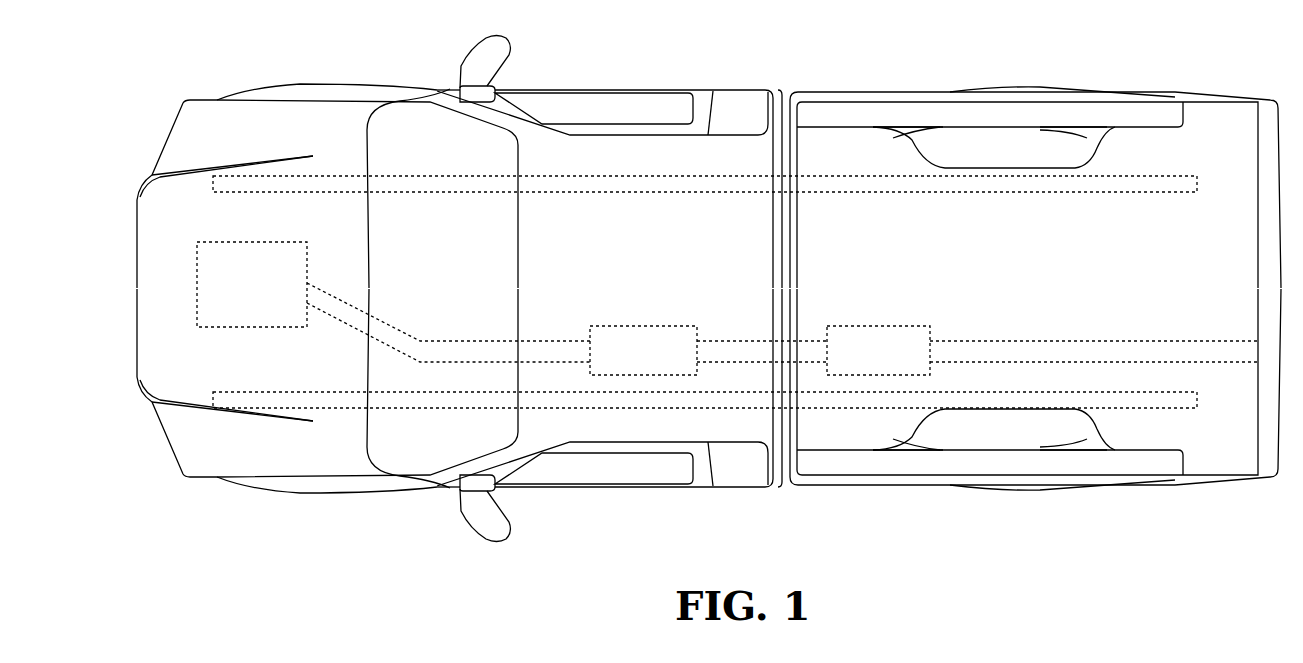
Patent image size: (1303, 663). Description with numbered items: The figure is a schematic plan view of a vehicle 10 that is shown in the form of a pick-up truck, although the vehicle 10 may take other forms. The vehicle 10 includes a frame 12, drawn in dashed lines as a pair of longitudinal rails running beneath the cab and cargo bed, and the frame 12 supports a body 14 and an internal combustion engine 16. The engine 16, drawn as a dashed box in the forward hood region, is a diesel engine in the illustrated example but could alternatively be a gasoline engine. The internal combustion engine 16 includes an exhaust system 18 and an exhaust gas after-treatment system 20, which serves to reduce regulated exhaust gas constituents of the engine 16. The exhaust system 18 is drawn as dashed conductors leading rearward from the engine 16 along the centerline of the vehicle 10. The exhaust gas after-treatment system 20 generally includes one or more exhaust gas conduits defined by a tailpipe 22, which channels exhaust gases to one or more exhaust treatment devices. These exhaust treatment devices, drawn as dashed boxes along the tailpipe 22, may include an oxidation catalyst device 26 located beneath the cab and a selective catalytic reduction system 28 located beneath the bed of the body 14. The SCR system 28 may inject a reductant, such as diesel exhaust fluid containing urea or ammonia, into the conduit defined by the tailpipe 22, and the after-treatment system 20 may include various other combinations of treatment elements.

The vehicle 10 is at (709, 300).
The frame 12 is at (859, 173).
The body 14 is at (1043, 84).
The internal combustion engine 16 is at (176, 288).
The exhaust system 18 is at (440, 334).
The exhaust gas after-treatment system 20 is at (816, 384).
The tailpipe 22 is at (490, 362).
The oxidation catalyst device 26 is at (640, 320).
The selective catalytic reduction system 28 is at (868, 320).